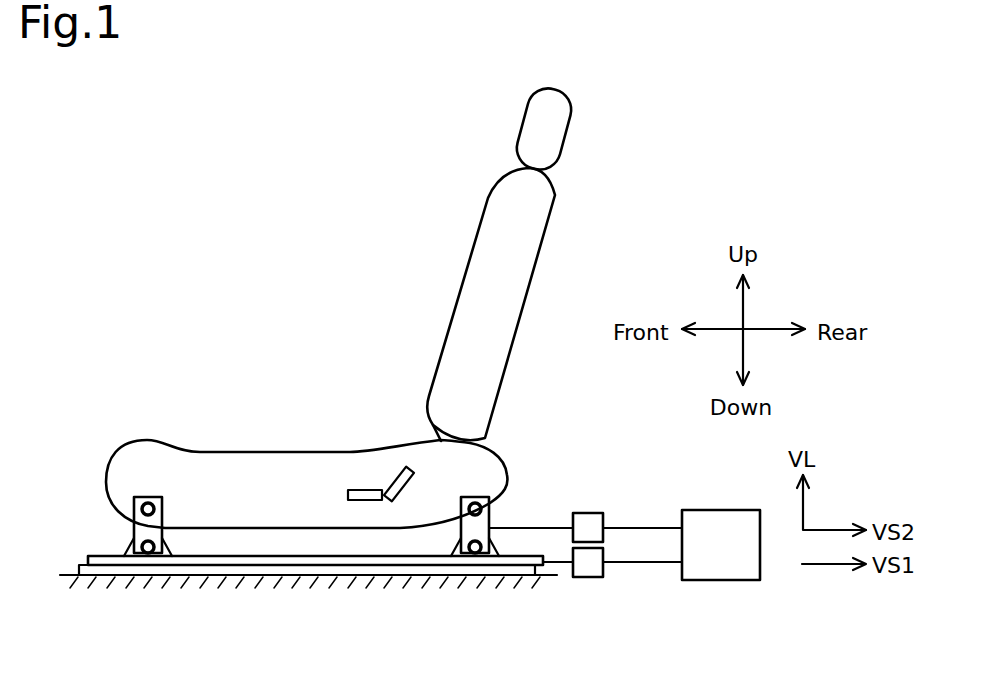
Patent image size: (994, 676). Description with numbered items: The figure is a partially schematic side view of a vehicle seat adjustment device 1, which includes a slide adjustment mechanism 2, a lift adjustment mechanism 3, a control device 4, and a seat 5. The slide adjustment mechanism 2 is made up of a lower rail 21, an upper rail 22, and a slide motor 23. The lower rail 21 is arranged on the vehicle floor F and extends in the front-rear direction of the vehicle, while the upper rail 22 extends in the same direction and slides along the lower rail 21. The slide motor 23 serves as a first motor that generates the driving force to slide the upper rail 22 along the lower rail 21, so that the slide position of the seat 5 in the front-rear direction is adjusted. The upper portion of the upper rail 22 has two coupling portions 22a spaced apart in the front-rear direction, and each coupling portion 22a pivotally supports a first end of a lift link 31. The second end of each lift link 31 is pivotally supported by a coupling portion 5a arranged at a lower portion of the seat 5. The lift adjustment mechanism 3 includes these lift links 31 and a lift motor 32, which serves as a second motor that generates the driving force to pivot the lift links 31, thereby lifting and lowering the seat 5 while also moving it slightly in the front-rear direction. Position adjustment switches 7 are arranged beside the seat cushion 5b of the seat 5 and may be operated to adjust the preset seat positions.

The vehicle seat adjustment device 1 is at (165, 183).
The slide adjustment mechanism 2 is at (563, 615).
The lift adjustment mechanism 3 is at (534, 465).
The control device 4 is at (722, 520).
The seat 5 is at (247, 466).
The coupling portion 5a is at (157, 497).
The seat cushion 5b is at (293, 466).
The position adjustment switch 7 is at (400, 470).
The lower rail 21 is at (303, 572).
The upper rail 22 is at (357, 561).
The coupling portion 22a is at (157, 562).
The slide motor 23 is at (590, 575).
The lift link 31 is at (157, 538).
The lift motor 32 is at (590, 520).
The vehicle floor F is at (72, 578).